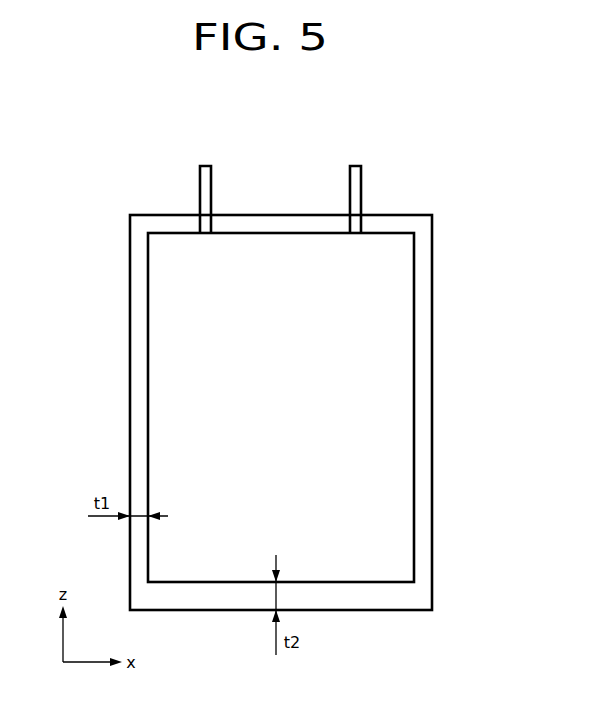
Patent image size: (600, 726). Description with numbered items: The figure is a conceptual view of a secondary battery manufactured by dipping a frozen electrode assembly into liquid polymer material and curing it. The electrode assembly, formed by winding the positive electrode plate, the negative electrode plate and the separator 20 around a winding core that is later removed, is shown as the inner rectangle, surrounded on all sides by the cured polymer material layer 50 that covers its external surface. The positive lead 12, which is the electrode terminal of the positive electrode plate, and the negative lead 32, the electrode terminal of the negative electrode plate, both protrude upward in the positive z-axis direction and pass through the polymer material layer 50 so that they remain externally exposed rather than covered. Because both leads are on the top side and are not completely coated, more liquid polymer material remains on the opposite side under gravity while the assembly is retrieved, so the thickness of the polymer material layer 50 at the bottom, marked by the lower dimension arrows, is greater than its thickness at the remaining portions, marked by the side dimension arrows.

The positive lead 12 is at (207, 172).
The negative lead 32 is at (357, 172).
The polymer material layer 50 is at (140, 302).
The separator 20 is at (165, 368).